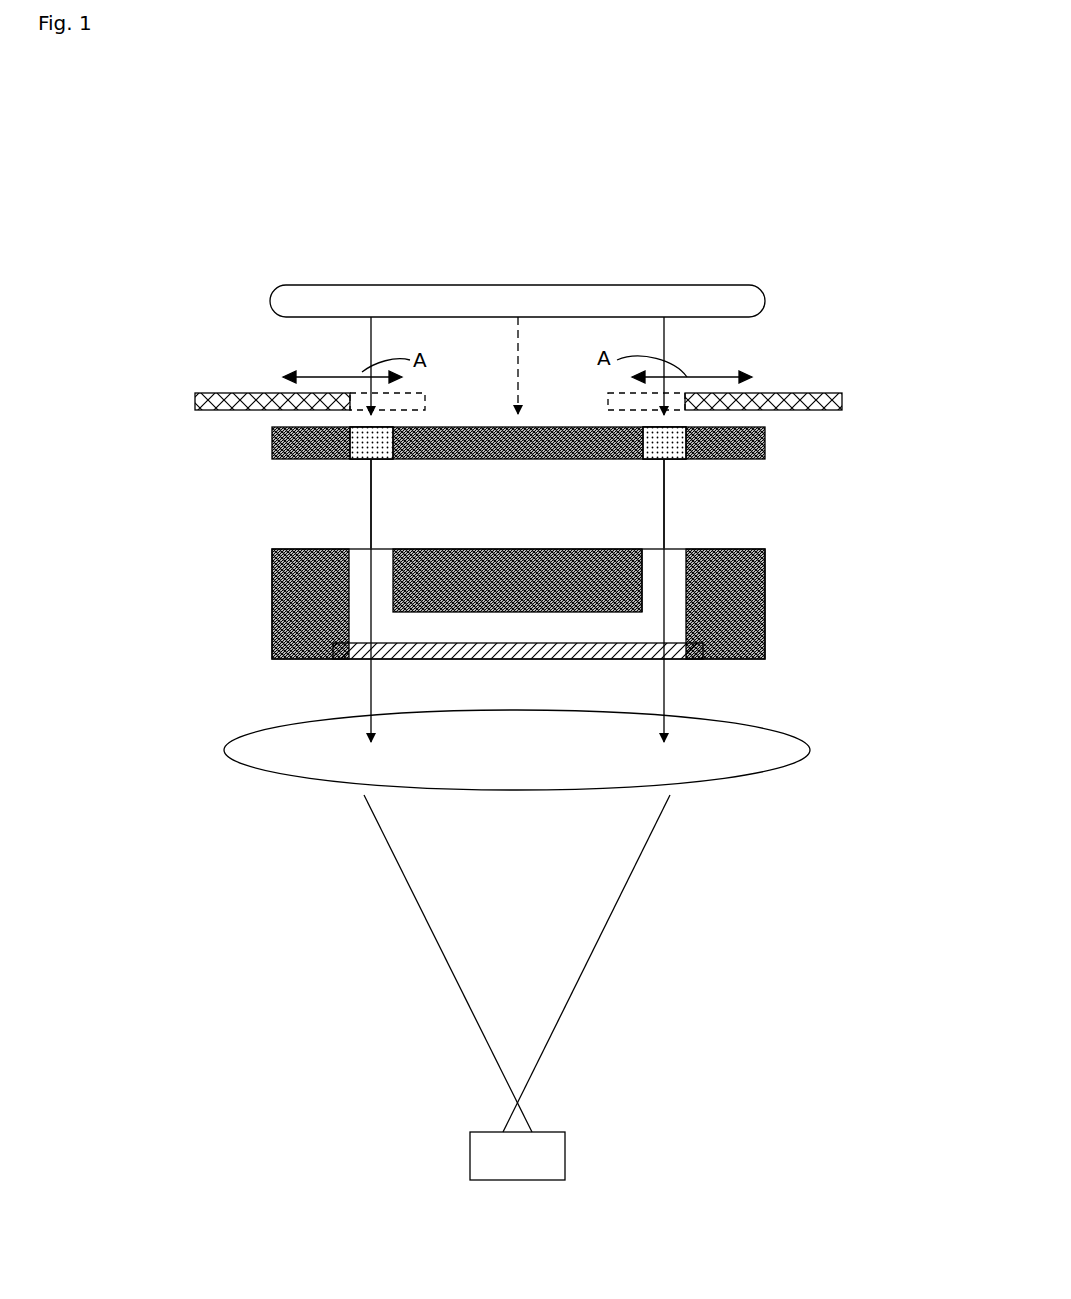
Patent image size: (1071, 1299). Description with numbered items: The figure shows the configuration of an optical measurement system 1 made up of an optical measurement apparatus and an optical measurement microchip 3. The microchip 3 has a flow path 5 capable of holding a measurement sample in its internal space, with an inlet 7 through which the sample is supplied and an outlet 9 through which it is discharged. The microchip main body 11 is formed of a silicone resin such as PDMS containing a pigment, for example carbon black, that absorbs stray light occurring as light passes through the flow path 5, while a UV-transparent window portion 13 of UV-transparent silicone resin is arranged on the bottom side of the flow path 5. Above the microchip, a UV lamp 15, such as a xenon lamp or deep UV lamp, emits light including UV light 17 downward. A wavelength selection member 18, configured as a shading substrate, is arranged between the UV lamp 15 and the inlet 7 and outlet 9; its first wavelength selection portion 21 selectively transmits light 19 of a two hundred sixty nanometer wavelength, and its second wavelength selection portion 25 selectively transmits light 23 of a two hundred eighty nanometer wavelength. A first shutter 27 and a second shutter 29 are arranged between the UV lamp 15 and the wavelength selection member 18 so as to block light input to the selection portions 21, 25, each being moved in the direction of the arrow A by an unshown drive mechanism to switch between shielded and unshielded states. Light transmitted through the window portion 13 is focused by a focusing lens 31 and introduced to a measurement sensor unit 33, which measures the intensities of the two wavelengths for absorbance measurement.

The optical measurement system 1 is at (681, 188).
The optical measurement microchip 3 is at (541, 641).
The flow path 5 is at (700, 603).
The inlet 7 is at (375, 557).
The outlet 9 is at (655, 557).
The microchip main body 11 is at (310, 615).
The UV-transparent window portion 13 is at (670, 660).
The UV lamp 15 is at (317, 300).
The light including UV light 17 is at (370, 335).
The wavelength selection member 18 is at (765, 431).
The light having a first wavelength 19 is at (363, 522).
The first wavelength selection portion 21 is at (365, 460).
The light having a second wavelength 23 is at (665, 517).
The second wavelength selection portion 25 is at (672, 460).
The first shutter 27 is at (263, 393).
The second shutter 29 is at (775, 393).
The focusing lens 31 is at (720, 758).
The measurement sensor unit 33 is at (540, 1157).